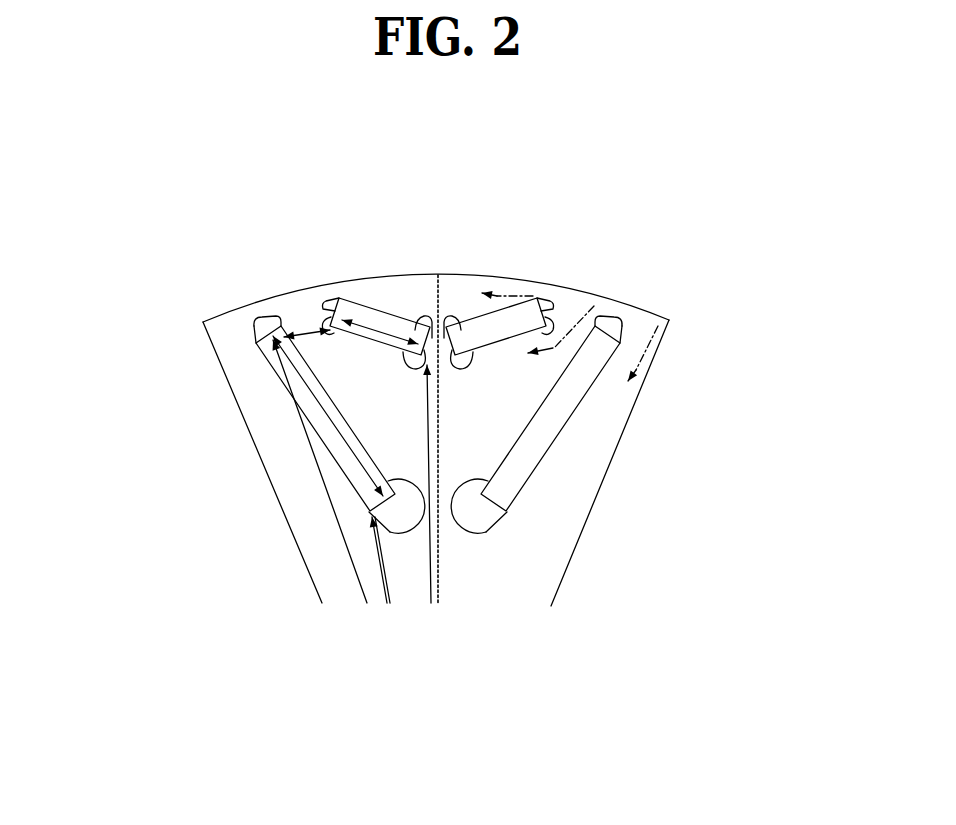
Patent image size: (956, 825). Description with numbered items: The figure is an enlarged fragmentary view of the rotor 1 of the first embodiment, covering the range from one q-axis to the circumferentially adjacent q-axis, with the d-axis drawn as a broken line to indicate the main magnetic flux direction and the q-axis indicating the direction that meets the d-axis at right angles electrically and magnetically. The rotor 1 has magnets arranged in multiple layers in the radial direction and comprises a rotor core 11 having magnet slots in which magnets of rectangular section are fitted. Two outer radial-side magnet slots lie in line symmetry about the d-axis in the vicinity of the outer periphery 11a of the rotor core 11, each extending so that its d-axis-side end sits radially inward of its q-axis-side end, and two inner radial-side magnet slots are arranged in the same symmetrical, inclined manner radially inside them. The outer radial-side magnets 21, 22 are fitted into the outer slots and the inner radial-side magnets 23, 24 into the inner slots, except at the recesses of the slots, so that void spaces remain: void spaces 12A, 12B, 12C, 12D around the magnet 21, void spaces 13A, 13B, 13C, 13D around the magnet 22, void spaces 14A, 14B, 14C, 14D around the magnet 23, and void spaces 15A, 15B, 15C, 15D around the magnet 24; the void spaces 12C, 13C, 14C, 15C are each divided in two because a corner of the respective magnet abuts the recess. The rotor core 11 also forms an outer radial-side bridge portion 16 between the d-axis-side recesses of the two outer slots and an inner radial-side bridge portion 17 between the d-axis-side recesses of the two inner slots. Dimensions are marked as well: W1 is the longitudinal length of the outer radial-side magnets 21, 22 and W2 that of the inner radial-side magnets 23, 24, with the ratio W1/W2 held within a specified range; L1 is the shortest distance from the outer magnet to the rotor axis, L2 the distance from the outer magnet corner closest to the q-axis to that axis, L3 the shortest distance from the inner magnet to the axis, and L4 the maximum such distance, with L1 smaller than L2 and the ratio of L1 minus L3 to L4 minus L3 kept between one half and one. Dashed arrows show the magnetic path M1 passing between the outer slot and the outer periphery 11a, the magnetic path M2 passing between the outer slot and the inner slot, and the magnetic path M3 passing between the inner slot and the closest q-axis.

The rotor 1 is at (425, 756).
The rotor core 11 is at (363, 597).
The outer periphery 11a is at (583, 290).
The void space 12A is at (323, 298).
The void space 12B is at (330, 326).
The void space 12C is at (420, 317).
The void space 12D is at (410, 352).
The void space 13A is at (549, 304).
The void space 13B is at (551, 320).
The void space 13C is at (452, 315).
The void space 13D is at (463, 352).
The void space 14A is at (258, 346).
The void space 14B is at (257, 318).
The void space 14C is at (371, 512).
The void space 14D is at (400, 514).
The void space 15A is at (620, 350).
The void space 15B is at (610, 330).
The void space 15C is at (508, 512).
The void space 15D is at (476, 520).
The outer radial-side bridge portion 16 is at (452, 532).
The inner radial-side bridge portion 17 is at (435, 448).
The outer radial-side magnet 21 is at (366, 311).
The outer radial-side magnet 22 is at (516, 322).
The inner radial-side magnet 23 is at (320, 414).
The inner radial-side magnet 24 is at (545, 430).
The shortest distance between outer radial-side magnet and rotor axis L1 is at (414, 484).
The distance between outer magnet corner closest to q-axis and rotor axis L2 is at (328, 416).
The shortest distance between inner radial-side magnet and rotor axis L3 is at (392, 560).
The maximum distance between inner radial-side magnet and rotor axis L4 is at (320, 471).
The longitudinal length of outer radial-side magnet W1 is at (380, 346).
The longitudinal length of inner radial-side magnet W2 is at (310, 351).
The magnetic path M1 is at (529, 295).
The magnetic path M2 is at (551, 349).
The magnetic path M3 is at (634, 372).
The element d-axis is at (437, 274).
The element q-axis is at (430, 316).